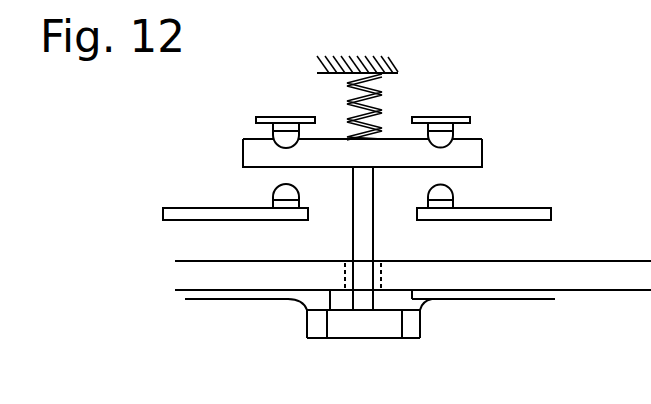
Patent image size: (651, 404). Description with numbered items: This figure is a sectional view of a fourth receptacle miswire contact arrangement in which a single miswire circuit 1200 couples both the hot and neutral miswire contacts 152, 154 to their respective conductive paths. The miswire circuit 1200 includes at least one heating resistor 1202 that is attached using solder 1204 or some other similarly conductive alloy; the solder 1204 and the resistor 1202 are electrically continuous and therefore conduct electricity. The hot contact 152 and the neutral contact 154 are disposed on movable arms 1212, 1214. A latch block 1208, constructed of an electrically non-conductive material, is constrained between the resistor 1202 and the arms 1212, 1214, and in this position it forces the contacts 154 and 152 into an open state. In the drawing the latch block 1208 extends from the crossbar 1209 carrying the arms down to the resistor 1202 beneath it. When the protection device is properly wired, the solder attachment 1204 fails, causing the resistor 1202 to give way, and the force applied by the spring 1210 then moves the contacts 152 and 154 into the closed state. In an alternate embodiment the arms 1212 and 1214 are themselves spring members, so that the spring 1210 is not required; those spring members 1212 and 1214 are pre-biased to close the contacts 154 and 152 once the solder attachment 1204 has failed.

The hot contact 152 is at (478, 188).
The neutral contact 154 is at (254, 188).
The miswire circuit 1200 is at (281, 326).
The heating resistor 1202 is at (360, 340).
The solder 1204 is at (431, 300).
The latch block 1208 is at (373, 229).
The crossbar 1209 is at (339, 168).
The spring 1210 is at (347, 105).
The movable arm 1212 is at (265, 117).
The movable arm 1214 is at (462, 117).